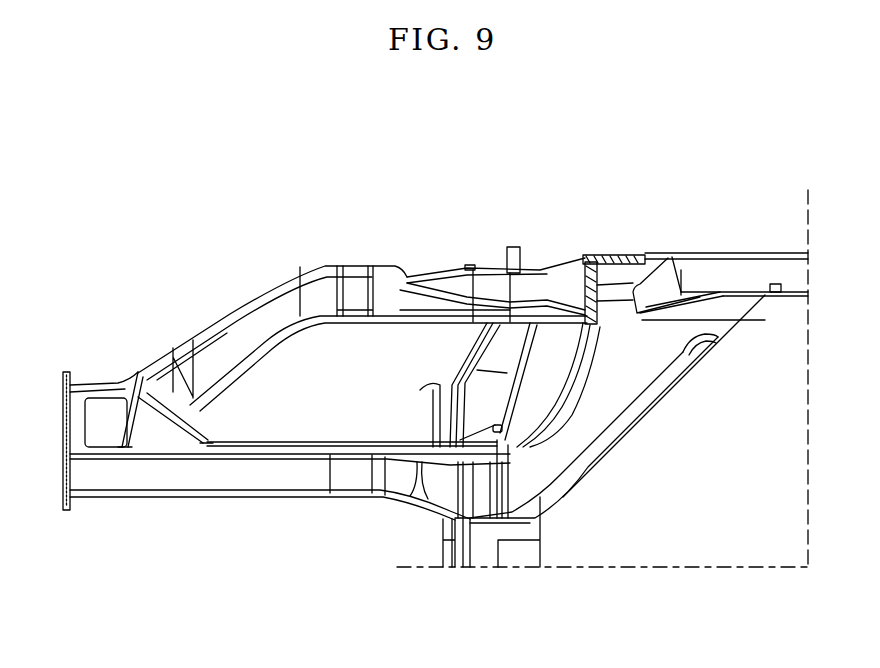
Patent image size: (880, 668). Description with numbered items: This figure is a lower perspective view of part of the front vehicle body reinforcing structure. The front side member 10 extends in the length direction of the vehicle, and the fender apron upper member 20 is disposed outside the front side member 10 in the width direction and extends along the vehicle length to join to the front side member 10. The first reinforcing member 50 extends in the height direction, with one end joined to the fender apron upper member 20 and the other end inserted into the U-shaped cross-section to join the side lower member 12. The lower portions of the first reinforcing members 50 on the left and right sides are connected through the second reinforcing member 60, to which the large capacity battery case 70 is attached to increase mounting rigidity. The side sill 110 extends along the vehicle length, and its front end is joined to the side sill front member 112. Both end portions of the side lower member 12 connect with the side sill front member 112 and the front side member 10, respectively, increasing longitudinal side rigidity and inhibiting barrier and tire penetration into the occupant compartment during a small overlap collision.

The front side member 10 is at (198, 485).
The side lower member 12 is at (537, 468).
The fender apron upper member 20 is at (230, 313).
The first reinforcing member 50 is at (448, 385).
The second reinforcing member 60 is at (458, 560).
The large capacity battery case 70 is at (728, 560).
The side sill 110 is at (755, 263).
The side sill front member 112 is at (662, 275).